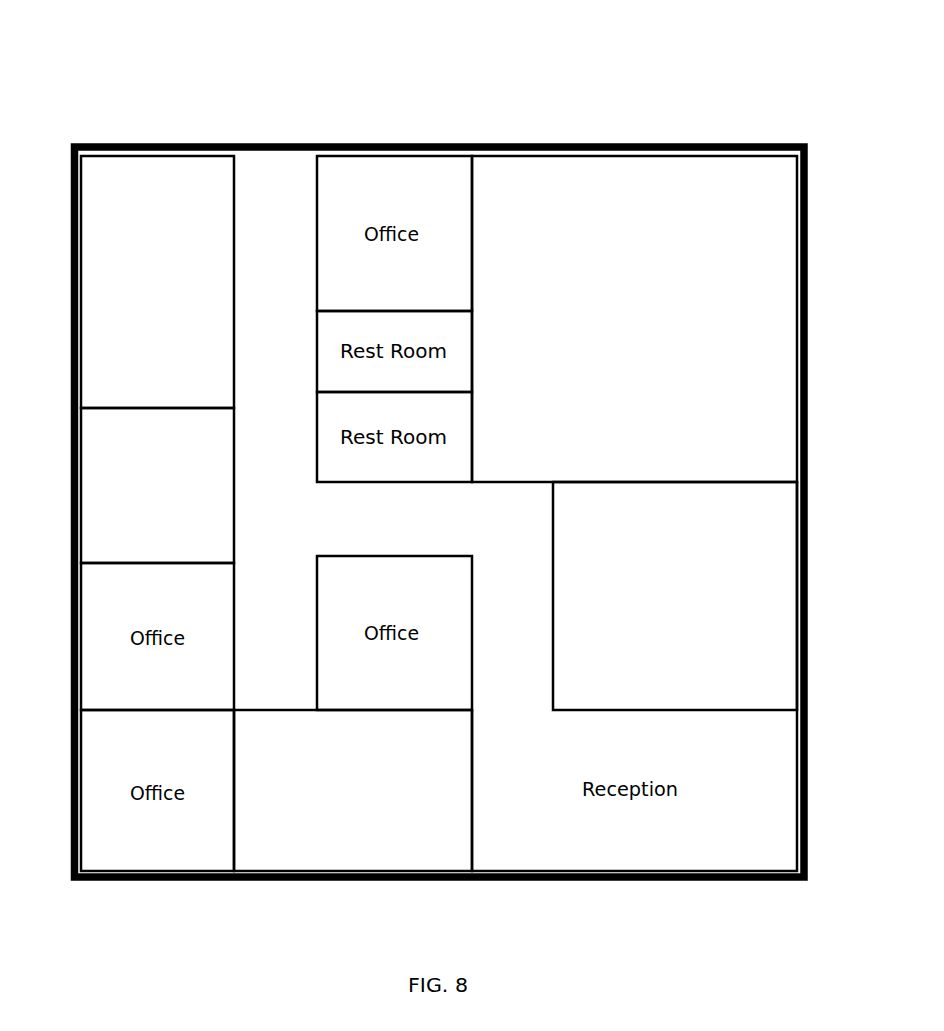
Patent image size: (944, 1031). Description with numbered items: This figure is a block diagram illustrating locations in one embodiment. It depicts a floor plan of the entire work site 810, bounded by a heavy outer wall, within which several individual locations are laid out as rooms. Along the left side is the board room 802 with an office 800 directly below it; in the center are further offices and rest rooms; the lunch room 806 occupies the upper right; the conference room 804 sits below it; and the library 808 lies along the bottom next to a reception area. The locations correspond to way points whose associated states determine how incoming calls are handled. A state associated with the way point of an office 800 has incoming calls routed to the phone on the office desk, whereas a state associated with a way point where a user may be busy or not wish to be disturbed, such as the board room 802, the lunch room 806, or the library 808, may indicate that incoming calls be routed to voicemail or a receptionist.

The office 800 is at (132, 485).
The board room 802 is at (131, 282).
The conference room 804 is at (703, 596).
The lunch room 806 is at (658, 319).
The library 808 is at (353, 811).
The entire work site 810 is at (440, 480).